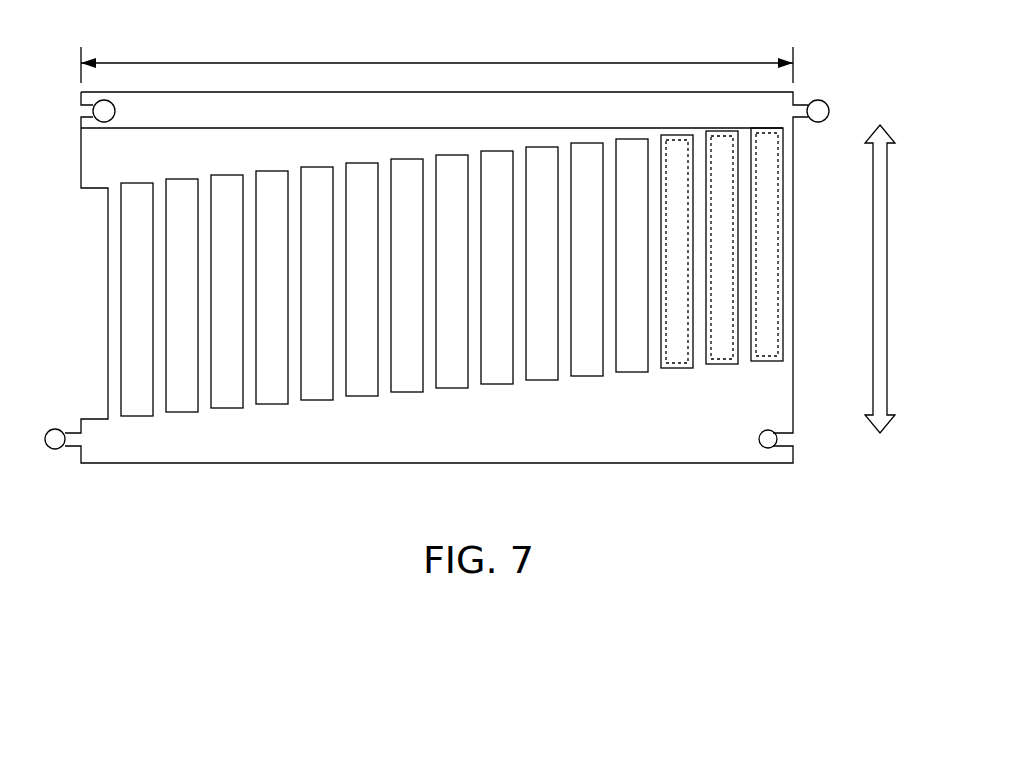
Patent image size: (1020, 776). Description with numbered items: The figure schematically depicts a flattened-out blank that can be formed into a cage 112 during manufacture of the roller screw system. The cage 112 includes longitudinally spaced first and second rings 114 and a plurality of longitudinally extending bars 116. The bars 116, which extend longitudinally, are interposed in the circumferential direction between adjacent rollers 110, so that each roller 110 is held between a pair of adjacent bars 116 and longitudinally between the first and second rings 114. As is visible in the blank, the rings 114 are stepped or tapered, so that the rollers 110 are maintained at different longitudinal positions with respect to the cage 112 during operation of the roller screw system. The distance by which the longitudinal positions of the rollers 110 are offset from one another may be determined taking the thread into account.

The roller 110 is at (780, 330).
The cage 112 is at (138, 549).
The ring 114 is at (712, 108).
The bar 116 is at (121, 257).